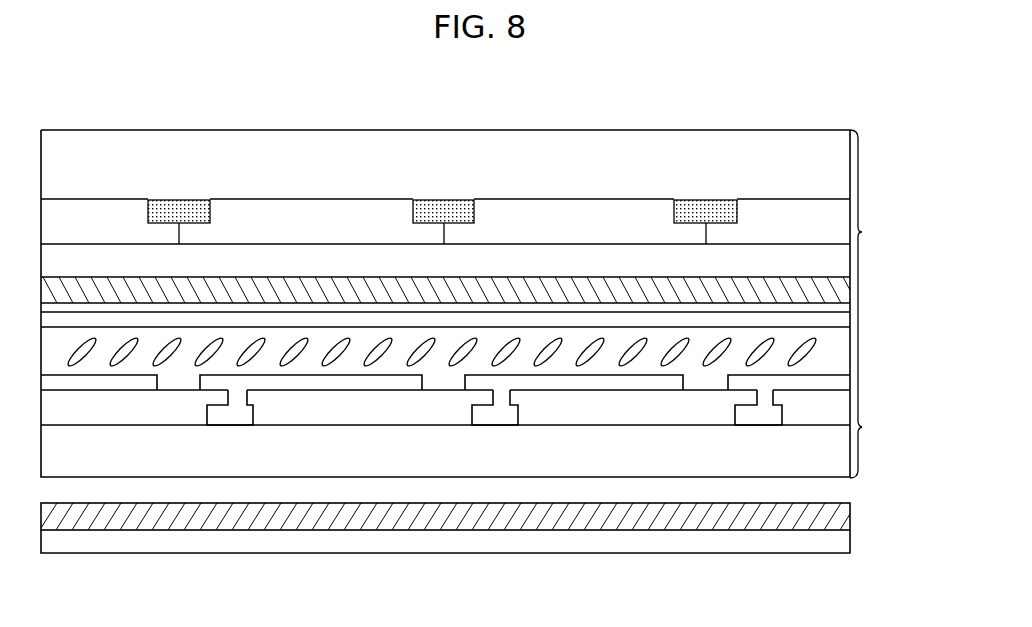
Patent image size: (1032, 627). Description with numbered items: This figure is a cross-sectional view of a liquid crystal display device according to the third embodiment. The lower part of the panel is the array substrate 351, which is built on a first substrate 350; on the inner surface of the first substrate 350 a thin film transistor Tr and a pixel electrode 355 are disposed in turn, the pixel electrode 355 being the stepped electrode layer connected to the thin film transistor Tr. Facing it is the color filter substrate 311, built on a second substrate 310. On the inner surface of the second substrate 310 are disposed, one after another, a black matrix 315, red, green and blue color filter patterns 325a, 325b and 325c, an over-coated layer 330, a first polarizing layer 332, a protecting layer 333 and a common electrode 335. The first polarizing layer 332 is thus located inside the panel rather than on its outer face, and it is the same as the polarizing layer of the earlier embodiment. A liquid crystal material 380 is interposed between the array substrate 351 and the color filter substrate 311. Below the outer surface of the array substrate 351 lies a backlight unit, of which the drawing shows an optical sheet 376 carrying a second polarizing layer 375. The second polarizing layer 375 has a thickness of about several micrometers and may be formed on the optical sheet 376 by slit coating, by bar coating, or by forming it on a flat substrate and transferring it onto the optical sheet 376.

The second substrate 310 is at (596, 173).
The color filter substrate 311 is at (879, 304).
The black matrix 315 is at (705, 205).
The red color filter pattern 325a is at (345, 225).
The green color filter pattern 325b is at (522, 233).
The blue color filter pattern 325c is at (66, 222).
The over-coated layer 330 is at (282, 265).
The first polarizing layer 332 is at (838, 290).
The protecting layer 333 is at (623, 305).
The common electrode 335 is at (233, 347).
The liquid crystal material 380 is at (838, 353).
The pixel electrode 355 is at (838, 387).
The thin film transistor Tr is at (492, 415).
The array substrate 351 is at (472, 426).
The first substrate 350 is at (596, 460).
The second polarizing layer 375 is at (612, 512).
The optical sheet 376 is at (688, 538).